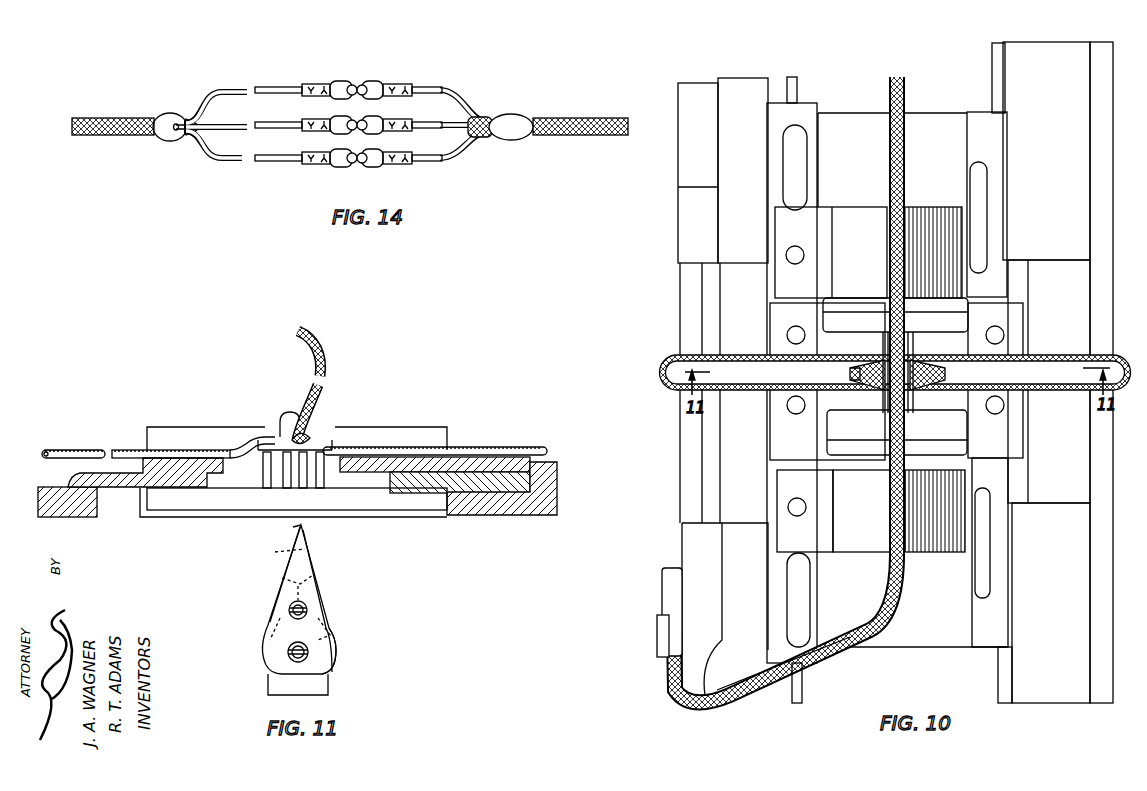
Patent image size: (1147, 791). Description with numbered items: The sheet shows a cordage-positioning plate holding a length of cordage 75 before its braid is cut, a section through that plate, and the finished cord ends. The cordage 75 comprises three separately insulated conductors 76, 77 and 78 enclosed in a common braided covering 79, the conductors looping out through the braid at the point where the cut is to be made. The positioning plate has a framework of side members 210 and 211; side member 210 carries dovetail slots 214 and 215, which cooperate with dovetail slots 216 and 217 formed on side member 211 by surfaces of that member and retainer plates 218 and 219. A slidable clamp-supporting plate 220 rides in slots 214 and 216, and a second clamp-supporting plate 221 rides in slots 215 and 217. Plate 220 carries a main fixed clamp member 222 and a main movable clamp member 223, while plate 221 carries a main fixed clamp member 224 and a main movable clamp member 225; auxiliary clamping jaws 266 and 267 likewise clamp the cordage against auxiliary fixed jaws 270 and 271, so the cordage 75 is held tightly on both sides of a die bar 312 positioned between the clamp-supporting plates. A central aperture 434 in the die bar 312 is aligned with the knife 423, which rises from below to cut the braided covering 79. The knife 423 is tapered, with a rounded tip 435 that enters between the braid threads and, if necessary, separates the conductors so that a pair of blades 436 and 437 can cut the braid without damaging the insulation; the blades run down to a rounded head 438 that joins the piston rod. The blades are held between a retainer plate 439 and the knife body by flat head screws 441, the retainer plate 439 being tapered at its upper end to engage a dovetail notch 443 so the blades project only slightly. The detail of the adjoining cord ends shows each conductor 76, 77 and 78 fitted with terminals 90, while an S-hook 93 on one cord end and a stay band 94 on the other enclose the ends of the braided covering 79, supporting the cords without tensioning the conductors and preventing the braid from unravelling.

In FIG. 14, the cordage 75 is at (350, 108).
In FIG. 11, the cordage 75 is at (307, 437).
In FIG. 10, the cordage 75 is at (660, 580).
In FIG. 14, the conductor 76 is at (288, 161).
In FIG. 11, the conductor 76 is at (490, 446).
In FIG. 10, the conductor 76 is at (1027, 363).
In FIG. 14, the conductor 77 is at (285, 124).
In FIG. 11, the conductor 77 is at (325, 368).
In FIG. 10, the conductor 77 is at (905, 358).
In FIG. 14, the conductor 78 is at (295, 88).
In FIG. 11, the conductor 78 is at (125, 450).
In FIG. 10, the conductor 78 is at (772, 362).
In FIG. 14, the braided covering 79 is at (137, 117).
In FIG. 10, the braided covering 79 is at (906, 603).
In FIG. 14, the terminals 90 is at (341, 82).
In FIG. 14, the S-hook 93 is at (172, 113).
In FIG. 14, the stay band 94 is at (510, 116).
In FIG. 11, the side member 210 is at (50, 487).
In FIG. 10, the side member 210 is at (697, 86).
In FIG. 11, the side member 211 is at (520, 513).
In FIG. 10, the side member 211 is at (1095, 44).
In FIG. 10, the dovetail slot 214 is at (802, 698).
In FIG. 10, the dovetail slot 215 is at (791, 80).
In FIG. 10, the dovetail slot 216 is at (1000, 690).
In FIG. 10, the dovetail slot 217 is at (992, 62).
In FIG. 10, the retainer plate 218 is at (1033, 705).
In FIG. 10, the retainer plate 219 is at (1035, 44).
In FIG. 10, the slidable clamp-supporting plate 220 is at (945, 652).
In FIG. 10, the slidable clamp-supporting plate 221 is at (951, 116).
In FIG. 10, the main fixed clamp member 222 is at (923, 550).
In FIG. 10, the main movable clamp member 223 is at (841, 549).
In FIG. 10, the main fixed clamp member 224 is at (948, 210).
In FIG. 10, the main movable clamp member 225 is at (852, 212).
In FIG. 10, the auxiliary clamping jaw 266 is at (771, 425).
In FIG. 11, the auxiliary clamping jaw 267 is at (202, 430).
In FIG. 10, the auxiliary clamping jaw 267 is at (772, 345).
In FIG. 10, the auxiliary fixed clamping jaw 270 is at (1022, 400).
In FIG. 11, the auxiliary fixed clamping jaw 271 is at (402, 430).
In FIG. 10, the auxiliary fixed clamping jaw 271 is at (1023, 340).
In FIG. 11, the die bar 312 is at (518, 455).
In FIG. 10, the die bar 312 is at (773, 385).
In FIG. 11, the knife 423 is at (302, 609).
In FIG. 11, the central aperture 434 is at (327, 482).
In FIG. 10, the central aperture 434 is at (865, 365).
In FIG. 11, the rounded tip 435 is at (301, 526).
In FIG. 11, the blade 436 is at (277, 597).
In FIG. 11, the blade 437 is at (327, 600).
In FIG. 11, the rounded head 438 is at (336, 658).
In FIG. 11, the retainer plate 439 is at (263, 658).
In FIG. 11, the flat head screws 441 is at (288, 650).
In FIG. 11, the dovetail notch 443 is at (276, 552).